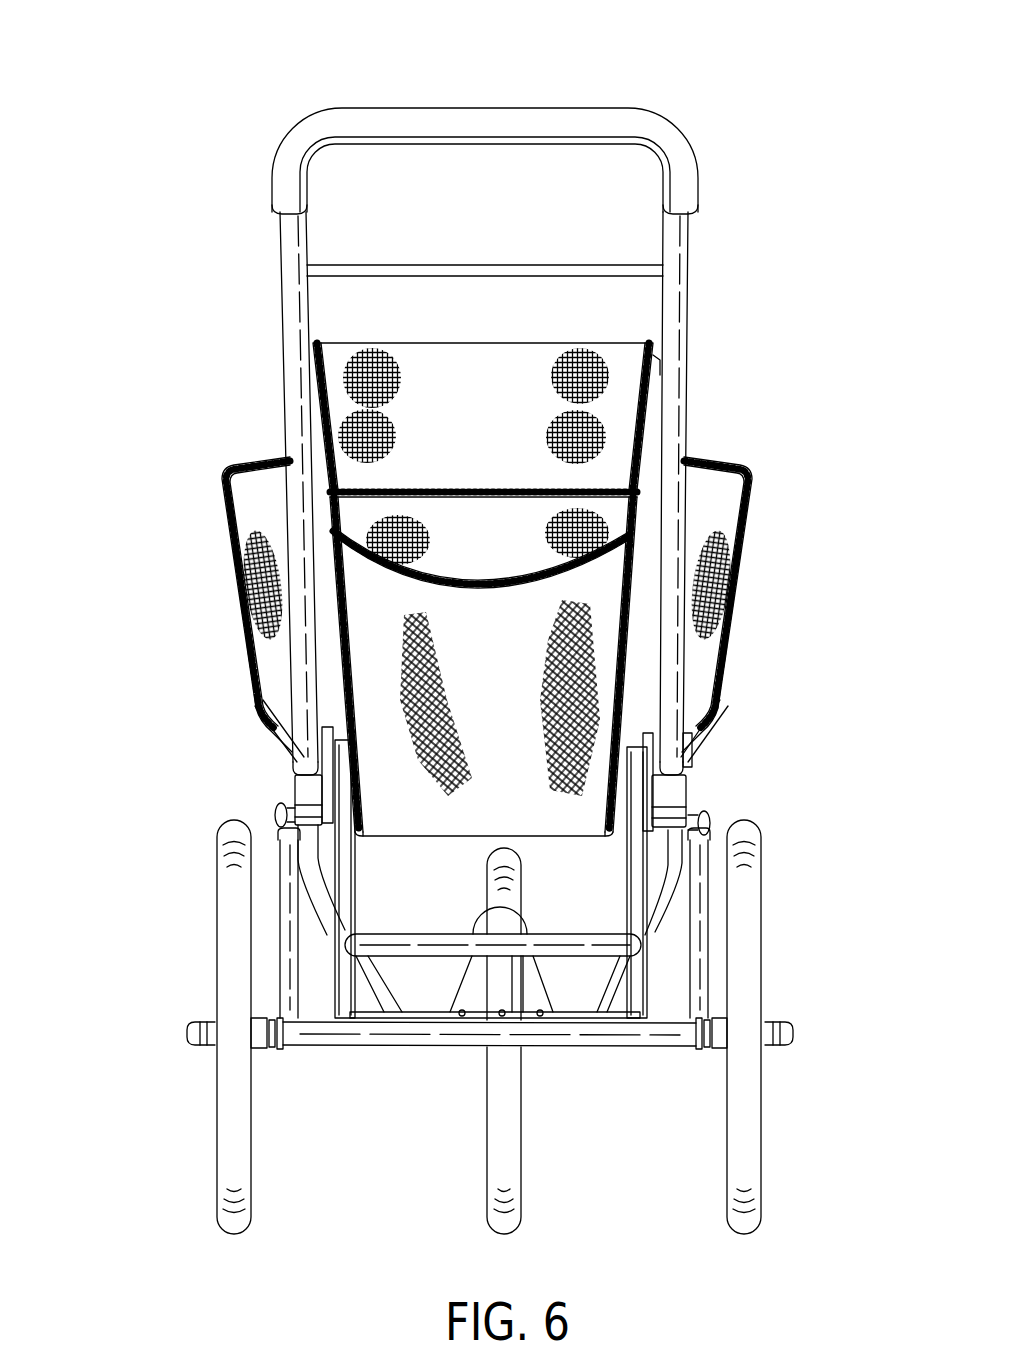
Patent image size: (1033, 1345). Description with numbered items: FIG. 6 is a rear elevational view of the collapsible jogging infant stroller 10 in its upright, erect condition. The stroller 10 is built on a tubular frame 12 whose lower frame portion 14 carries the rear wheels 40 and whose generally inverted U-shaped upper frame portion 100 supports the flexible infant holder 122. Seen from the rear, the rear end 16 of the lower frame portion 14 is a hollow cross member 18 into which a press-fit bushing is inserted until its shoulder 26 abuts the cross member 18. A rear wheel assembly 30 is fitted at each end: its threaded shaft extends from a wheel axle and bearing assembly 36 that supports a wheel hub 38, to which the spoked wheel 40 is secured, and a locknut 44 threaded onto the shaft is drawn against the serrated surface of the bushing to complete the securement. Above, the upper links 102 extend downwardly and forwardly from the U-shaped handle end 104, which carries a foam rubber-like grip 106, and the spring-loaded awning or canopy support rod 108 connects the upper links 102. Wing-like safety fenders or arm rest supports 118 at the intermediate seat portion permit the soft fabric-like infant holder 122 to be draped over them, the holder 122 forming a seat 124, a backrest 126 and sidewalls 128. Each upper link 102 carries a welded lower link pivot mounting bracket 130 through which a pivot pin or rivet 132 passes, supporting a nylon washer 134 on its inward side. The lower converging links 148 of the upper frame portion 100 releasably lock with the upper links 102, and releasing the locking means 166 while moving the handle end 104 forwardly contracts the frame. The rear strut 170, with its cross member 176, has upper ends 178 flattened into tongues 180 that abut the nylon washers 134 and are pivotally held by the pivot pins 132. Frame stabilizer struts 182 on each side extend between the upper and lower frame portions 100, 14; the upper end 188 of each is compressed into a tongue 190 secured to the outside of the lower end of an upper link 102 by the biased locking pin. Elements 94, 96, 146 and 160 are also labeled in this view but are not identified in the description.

The collapsible jogging infant stroller 10 is at (312, 80).
The tubular frame 12 is at (690, 244).
The lower frame portion 14 is at (615, 1047).
The rear end 16 is at (489, 1034).
The cross member 18 is at (489, 1034).
The shoulder 26 is at (283, 1047).
The rear wheel assemblies 30 is at (195, 1012).
The wheel axle and bearing assembly 36 is at (490, 1033).
The wheel hub 38 is at (490, 1033).
The rear wheel 40 is at (218, 932).
The locknut 44 is at (278, 1047).
The front wheel 94 is at (515, 932).
The front wheel bracket 96 is at (535, 1005).
The upper frame portion 100 is at (676, 362).
The upper links 102 is at (286, 320).
The handle end 104 is at (455, 115).
The grip 106 is at (485, 160).
The awning or canopy support rod 108 is at (483, 268).
The wing-like safety fenders or arm rest supports 118 is at (235, 527).
The flexible infant holder 122 is at (497, 548).
The seat 124 is at (413, 838).
The backrest 126 is at (512, 633).
The sidewalls 128 is at (320, 655).
The lower link pivot mounting bracket 130 is at (296, 790).
The pivot pin 132 is at (583, 750).
The nylon washer 134 is at (345, 662).
The locking knob 146 is at (270, 812).
The lower converging links 148 is at (318, 897).
The hinge plate 160 is at (340, 820).
The locking means 166 is at (492, 819).
The rear strut 170 is at (418, 960).
The cross member 176 is at (493, 945).
The upper ends 178 is at (296, 770).
The tongue 180 is at (507, 779).
The frame stabilizer struts 182 is at (283, 958).
The upper end 188 is at (240, 828).
The tongue 190 is at (494, 834).